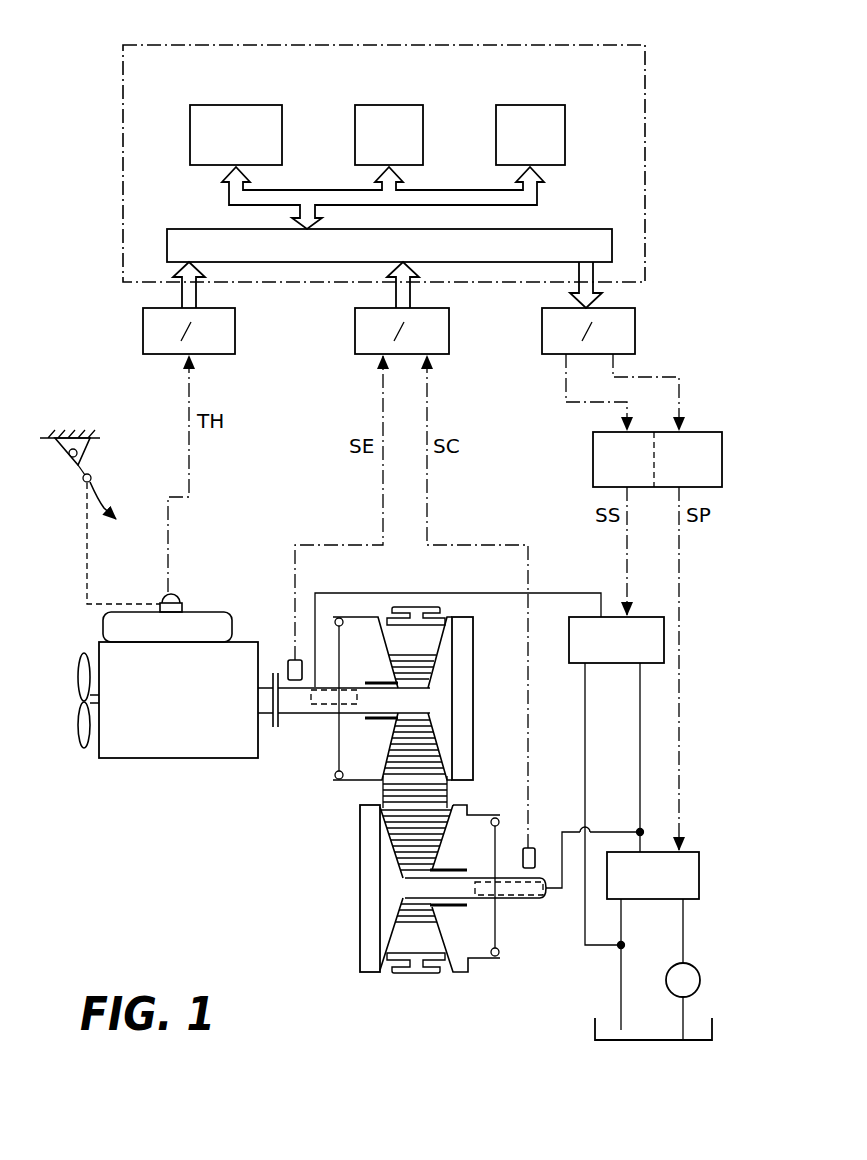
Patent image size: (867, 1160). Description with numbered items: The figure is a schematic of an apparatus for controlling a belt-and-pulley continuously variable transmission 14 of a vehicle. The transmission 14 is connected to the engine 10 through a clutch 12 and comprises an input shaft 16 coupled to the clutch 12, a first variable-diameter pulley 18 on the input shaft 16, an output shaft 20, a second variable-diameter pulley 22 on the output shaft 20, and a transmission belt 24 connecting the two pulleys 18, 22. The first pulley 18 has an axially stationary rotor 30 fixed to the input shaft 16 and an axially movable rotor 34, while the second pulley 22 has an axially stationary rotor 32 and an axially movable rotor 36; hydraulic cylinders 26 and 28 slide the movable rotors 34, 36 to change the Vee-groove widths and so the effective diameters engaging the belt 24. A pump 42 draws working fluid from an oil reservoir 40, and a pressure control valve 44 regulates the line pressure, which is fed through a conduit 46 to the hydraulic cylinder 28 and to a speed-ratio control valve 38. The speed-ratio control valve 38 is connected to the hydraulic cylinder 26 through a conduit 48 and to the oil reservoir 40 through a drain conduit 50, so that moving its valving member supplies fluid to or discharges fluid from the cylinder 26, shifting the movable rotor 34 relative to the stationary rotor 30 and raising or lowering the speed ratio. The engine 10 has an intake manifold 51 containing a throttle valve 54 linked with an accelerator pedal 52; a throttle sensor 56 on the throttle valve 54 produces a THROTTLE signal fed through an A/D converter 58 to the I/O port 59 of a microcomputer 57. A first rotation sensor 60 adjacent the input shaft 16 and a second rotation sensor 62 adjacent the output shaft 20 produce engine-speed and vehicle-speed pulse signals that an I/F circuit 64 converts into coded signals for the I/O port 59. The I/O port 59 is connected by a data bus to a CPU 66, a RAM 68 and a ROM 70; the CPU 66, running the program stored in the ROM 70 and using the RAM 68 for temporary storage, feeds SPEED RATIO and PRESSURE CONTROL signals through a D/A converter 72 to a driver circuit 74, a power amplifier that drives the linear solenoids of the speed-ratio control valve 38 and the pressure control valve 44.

The engine 10 is at (135, 756).
The clutch 12 is at (275, 740).
The continuously variable transmission 14 is at (299, 882).
The input shaft 16 is at (420, 703).
The first variable-diameter pulley 18 is at (349, 806).
The output shaft 20 is at (413, 888).
The second variable-diameter pulley 22 is at (367, 980).
The transmission belt 24 is at (421, 980).
The hydraulic cylinder 26 is at (336, 755).
The hydraulic cylinder 28 is at (505, 914).
The axially stationary rotor 30 is at (465, 640).
The axially stationary rotor 32 is at (366, 958).
The axially movable rotor 34 is at (350, 784).
The axially movable rotor 36 is at (460, 975).
The speed-ratio control valve 38 is at (612, 628).
The oil reservoir 40 is at (594, 1036).
The pump 42 is at (690, 980).
The pressure control valve 44 is at (690, 888).
The conduit 46 is at (643, 850).
The conduit 48 is at (452, 592).
The drain conduit 50 is at (585, 735).
The intake manifold 51 is at (115, 628).
The accelerator pedal 52 is at (85, 481).
The throttle valve 54 is at (182, 607).
The throttle sensor 56 is at (176, 594).
The microcomputer 57 is at (602, 44).
The A/D converter 58 is at (143, 334).
The I/O port 59 is at (186, 232).
The first rotation sensor 60 is at (290, 660).
The second rotation sensor 62 is at (534, 850).
The I/F circuit 64 is at (440, 343).
The CPU 66 is at (260, 112).
The RAM 68 is at (409, 112).
The ROM 70 is at (550, 112).
The D/A converter 72 is at (628, 347).
The driver circuit 74 is at (600, 477).